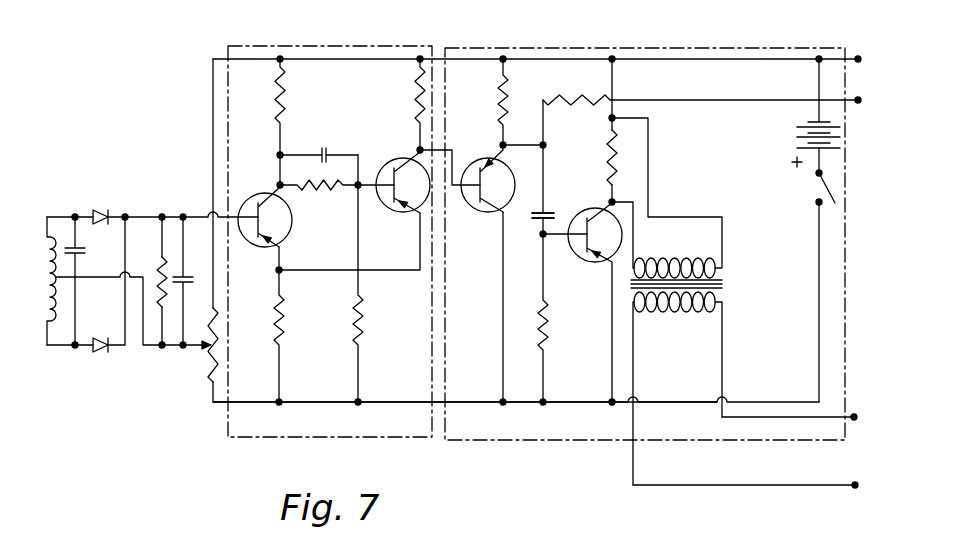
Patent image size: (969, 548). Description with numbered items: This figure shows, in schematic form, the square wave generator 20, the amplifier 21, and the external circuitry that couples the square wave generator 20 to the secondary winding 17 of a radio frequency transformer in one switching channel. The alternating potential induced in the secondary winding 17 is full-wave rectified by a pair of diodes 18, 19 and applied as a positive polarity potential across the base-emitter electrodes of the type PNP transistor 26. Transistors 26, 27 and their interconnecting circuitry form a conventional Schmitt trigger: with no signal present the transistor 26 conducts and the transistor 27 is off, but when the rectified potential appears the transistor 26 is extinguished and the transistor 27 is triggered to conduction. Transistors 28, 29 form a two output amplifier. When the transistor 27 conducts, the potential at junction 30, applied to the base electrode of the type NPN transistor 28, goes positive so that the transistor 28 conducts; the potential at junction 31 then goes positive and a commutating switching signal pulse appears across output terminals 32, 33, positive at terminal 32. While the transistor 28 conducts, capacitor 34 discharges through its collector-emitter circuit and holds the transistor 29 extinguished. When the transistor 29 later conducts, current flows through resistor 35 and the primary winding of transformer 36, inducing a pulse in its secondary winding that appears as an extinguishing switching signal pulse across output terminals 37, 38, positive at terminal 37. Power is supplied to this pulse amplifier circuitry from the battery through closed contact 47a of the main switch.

The secondary winding 17 is at (129, 283).
The diode 18 is at (103, 212).
The diode 19 is at (100, 353).
The square wave generator 20 is at (325, 45).
The amplifier 21 is at (528, 48).
The transistor 26 is at (292, 236).
The transistor 27 is at (385, 170).
The transistor 28 is at (478, 163).
The transistor 29 is at (582, 256).
The junction 30 is at (420, 148).
The junction 31 is at (503, 145).
The output terminal 32 is at (858, 100).
The output terminal 33 is at (858, 59).
The capacitor 34 is at (544, 211).
The resistor 35 is at (610, 162).
The transformer 36 is at (770, 302).
The output terminal 37 is at (855, 420).
The output terminal 38 is at (855, 487).
The contact 47a is at (817, 180).